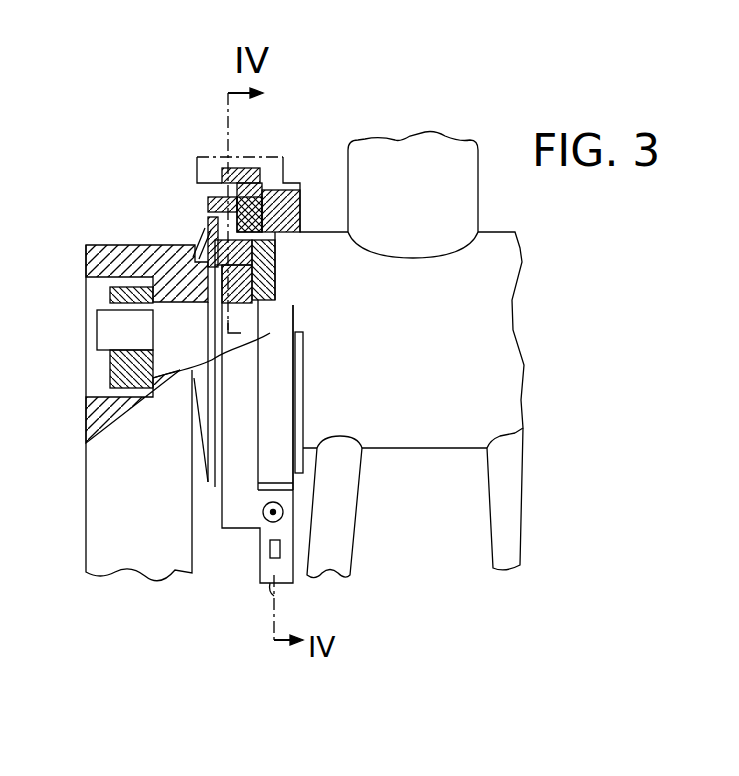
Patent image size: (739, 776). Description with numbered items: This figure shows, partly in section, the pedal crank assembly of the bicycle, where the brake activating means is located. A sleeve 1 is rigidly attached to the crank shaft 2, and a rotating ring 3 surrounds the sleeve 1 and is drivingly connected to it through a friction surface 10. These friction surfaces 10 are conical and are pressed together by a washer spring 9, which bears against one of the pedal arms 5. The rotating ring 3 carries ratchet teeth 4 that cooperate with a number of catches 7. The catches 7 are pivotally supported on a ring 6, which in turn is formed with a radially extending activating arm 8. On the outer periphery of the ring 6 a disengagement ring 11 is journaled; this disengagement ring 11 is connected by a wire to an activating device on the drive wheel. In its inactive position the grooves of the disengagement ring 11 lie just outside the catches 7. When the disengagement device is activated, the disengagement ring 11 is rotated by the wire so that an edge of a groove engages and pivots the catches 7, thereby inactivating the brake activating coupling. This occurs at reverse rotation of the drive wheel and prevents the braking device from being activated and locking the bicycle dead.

The sleeve 1 is at (272, 352).
The crank shaft 2 is at (170, 317).
The rotating ring 3 is at (210, 305).
The ratchet teeth 4 is at (253, 233).
The pedal arm 5 is at (103, 505).
The ring 6 is at (208, 205).
The catches 7 is at (222, 180).
The activating arm 8 is at (270, 585).
The washer spring 9 is at (205, 245).
The friction surface 10 is at (262, 278).
The disengagement ring 11 is at (262, 165).